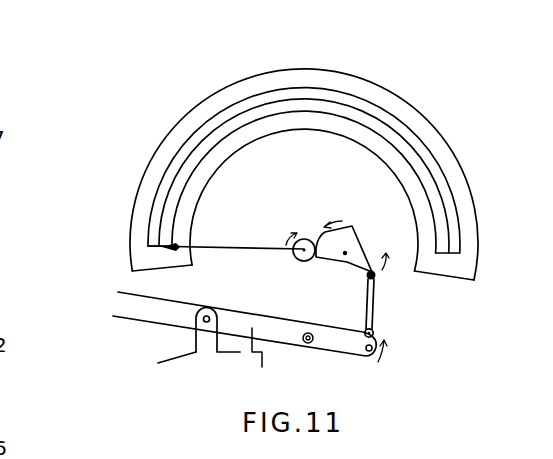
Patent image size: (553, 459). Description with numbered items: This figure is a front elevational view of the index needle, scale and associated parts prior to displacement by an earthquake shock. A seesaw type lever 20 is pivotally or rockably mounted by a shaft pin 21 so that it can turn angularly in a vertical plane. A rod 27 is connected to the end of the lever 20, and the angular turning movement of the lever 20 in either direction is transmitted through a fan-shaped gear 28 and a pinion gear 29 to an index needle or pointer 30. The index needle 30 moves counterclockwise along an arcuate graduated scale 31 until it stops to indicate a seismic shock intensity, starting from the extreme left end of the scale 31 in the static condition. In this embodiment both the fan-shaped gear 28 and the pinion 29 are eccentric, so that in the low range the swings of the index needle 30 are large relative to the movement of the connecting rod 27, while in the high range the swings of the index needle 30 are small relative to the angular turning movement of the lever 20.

The seesaw type lever 20 is at (252, 352).
The shaft pin 21 is at (203, 320).
The rod 27 is at (376, 311).
The fan-shaped gear 28 is at (353, 229).
The pinion gear 29 is at (309, 239).
The index needle 30 is at (245, 247).
The arcuate graduated scale 31 is at (404, 110).